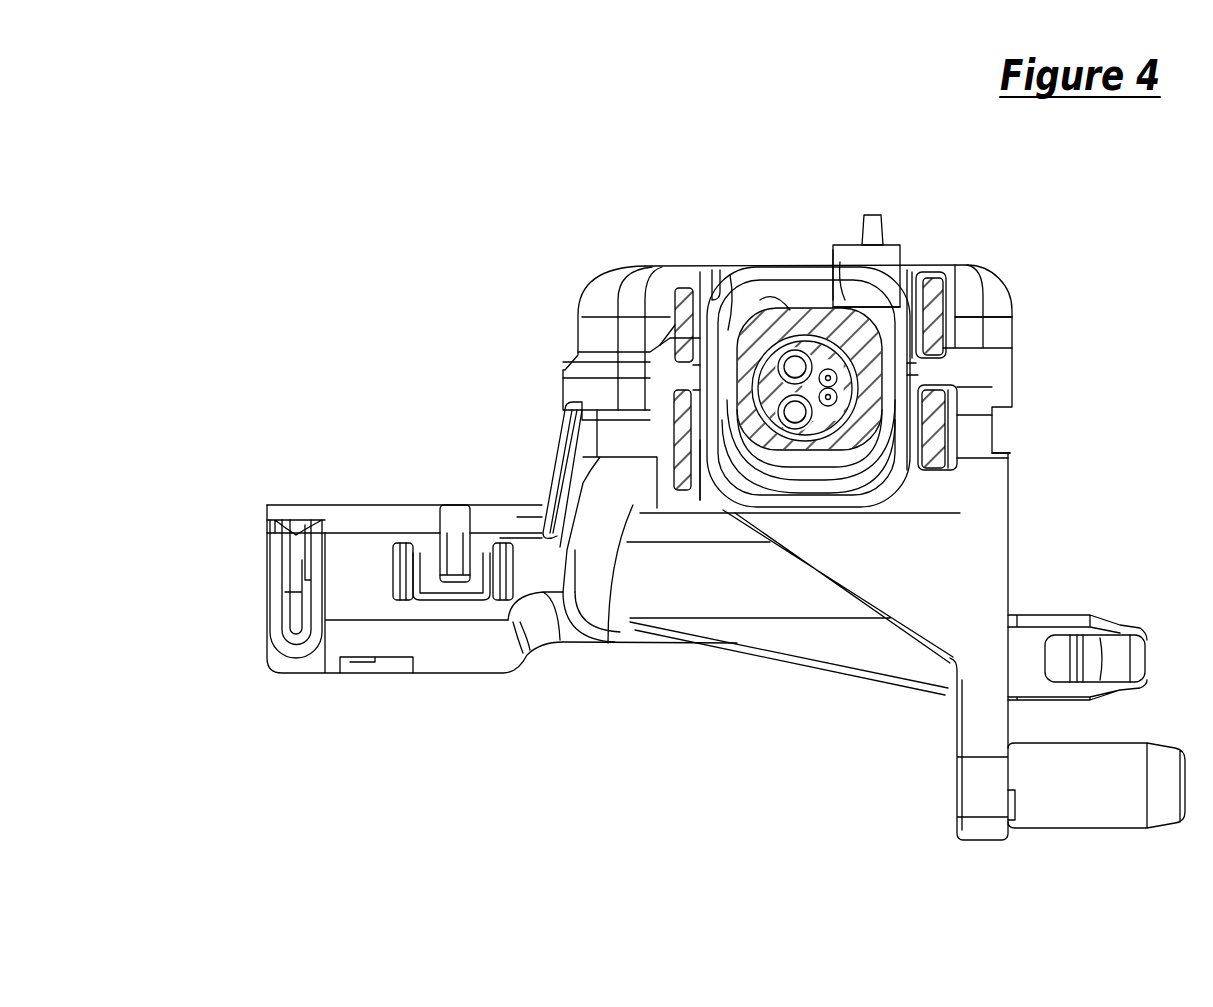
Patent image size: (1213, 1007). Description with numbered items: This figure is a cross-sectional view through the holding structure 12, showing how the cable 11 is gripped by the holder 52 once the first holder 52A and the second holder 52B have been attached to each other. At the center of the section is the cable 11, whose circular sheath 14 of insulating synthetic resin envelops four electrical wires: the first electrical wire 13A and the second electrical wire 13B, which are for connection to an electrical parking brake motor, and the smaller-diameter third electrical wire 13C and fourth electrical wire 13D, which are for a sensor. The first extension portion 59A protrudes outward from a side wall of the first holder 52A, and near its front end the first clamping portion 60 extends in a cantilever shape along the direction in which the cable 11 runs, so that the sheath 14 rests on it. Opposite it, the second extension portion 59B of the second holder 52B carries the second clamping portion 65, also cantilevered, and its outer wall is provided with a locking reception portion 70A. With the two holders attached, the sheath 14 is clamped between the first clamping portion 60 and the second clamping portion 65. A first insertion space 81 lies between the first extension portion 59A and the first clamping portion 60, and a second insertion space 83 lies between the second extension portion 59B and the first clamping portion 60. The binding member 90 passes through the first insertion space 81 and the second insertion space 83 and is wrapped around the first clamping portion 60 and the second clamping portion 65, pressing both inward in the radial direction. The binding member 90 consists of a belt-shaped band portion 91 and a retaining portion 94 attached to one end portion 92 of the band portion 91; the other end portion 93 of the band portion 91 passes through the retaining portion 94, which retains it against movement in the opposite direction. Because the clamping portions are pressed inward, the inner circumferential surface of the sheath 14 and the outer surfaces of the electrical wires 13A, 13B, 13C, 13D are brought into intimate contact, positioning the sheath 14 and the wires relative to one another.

The cable 11 is at (835, 447).
The holding structure 12 is at (492, 276).
The first electrical wire 13A is at (797, 352).
The second electrical wire 13B is at (790, 416).
The third electrical wire 13C is at (832, 403).
The fourth electrical wire 13D is at (838, 380).
The sheath 14 is at (804, 447).
The holder 52 is at (170, 535).
The first holder 52A is at (272, 562).
The second holder 52B is at (280, 510).
The first extension portion 59A is at (938, 450).
The second extension portion 59B is at (937, 327).
The first clamping portion 60 is at (782, 447).
The second clamping portion 65 is at (782, 308).
The locking reception portion 70A is at (688, 442).
The first insertion space 81 is at (701, 465).
The second insertion space 83 is at (724, 288).
The binding member 90 is at (890, 247).
The band portion 91 is at (735, 300).
The one end portion 92 is at (835, 300).
The other end portion 93 is at (873, 215).
The retaining portion 94 is at (888, 255).